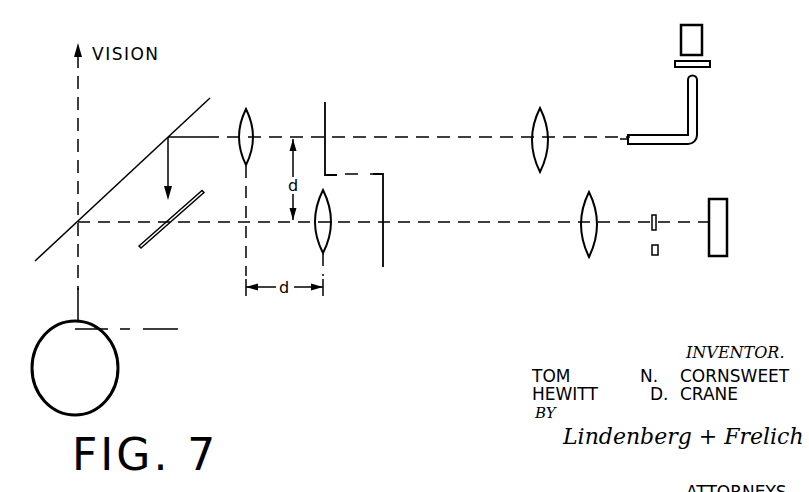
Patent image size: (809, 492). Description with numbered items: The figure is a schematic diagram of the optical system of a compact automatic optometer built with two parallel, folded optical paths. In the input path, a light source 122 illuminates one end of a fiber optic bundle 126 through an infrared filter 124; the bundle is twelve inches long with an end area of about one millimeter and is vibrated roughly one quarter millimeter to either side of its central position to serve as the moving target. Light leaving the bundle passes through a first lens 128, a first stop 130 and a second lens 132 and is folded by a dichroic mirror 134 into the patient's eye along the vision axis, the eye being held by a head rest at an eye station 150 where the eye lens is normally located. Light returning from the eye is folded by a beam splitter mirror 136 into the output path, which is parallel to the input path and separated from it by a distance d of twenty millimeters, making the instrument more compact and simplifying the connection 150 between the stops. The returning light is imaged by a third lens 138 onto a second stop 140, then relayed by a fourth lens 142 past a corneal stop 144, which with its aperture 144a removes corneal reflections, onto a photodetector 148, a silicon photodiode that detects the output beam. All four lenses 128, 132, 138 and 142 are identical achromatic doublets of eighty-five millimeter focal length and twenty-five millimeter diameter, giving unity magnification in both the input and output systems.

The light source 122 is at (703, 41).
The infrared filter 124 is at (711, 64).
The fiber optic bundle 126 is at (697, 112).
The first lens 128 is at (544, 112).
The first stop 130 is at (326, 112).
The second lens 132 is at (249, 113).
The dichroic mirror 134 is at (188, 118).
The beam splitter mirror 136 is at (153, 239).
The third lens 138 is at (330, 232).
The second stop 140 is at (384, 247).
The fourth lens 142 is at (594, 241).
The corneal stop 144 is at (656, 213).
The slit aperture 144a is at (659, 251).
The photodetector 148 is at (712, 198).
The eye station 150 is at (355, 174).